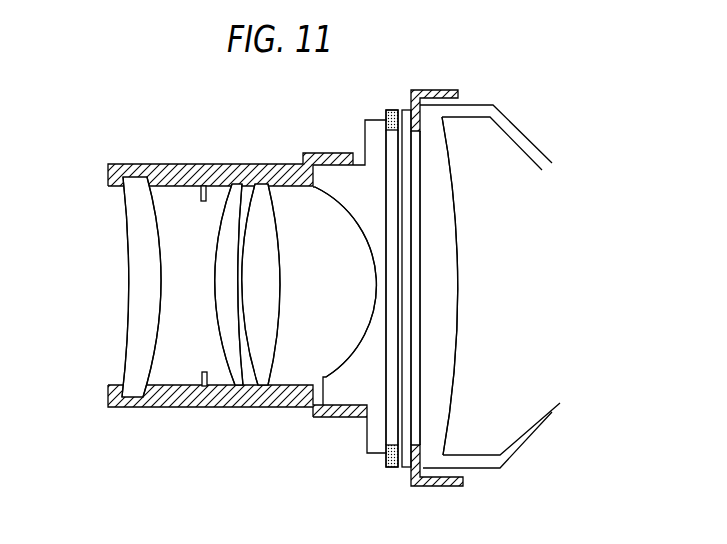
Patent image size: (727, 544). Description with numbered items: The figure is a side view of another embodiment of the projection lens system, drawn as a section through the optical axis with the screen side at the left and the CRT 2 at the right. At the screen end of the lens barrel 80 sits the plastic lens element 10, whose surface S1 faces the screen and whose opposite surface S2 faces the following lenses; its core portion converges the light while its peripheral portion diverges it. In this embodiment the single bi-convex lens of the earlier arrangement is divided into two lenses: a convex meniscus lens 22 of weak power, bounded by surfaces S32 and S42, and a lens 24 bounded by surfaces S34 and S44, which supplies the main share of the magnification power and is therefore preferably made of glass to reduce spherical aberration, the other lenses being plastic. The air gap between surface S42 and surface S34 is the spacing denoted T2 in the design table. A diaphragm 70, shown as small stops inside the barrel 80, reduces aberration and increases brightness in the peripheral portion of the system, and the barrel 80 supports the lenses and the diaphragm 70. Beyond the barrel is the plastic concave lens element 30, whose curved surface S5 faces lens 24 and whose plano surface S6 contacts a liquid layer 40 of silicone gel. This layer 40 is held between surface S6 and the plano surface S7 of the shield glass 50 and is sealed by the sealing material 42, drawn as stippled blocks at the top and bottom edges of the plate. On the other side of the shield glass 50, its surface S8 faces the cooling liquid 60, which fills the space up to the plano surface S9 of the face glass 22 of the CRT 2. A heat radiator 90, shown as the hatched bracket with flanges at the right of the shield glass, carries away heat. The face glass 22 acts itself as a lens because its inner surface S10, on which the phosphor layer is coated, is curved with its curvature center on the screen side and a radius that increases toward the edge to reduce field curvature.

The CRT 2 is at (538, 148).
The lens element 10 is at (133, 342).
The convex meniscus lens 22 is at (227, 343).
The lens 24 is at (273, 342).
The concave lens element 30 is at (350, 212).
The liquid layer 40 is at (397, 419).
The sealing material 42 is at (393, 468).
The shield glass 50 is at (409, 468).
The cooling liquid 60 is at (420, 342).
The diaphragm 70 is at (202, 193).
The lens barrel 80 is at (188, 403).
The heat radiator 90 is at (443, 486).
The surface S1 is at (124, 293).
The surface S2 is at (156, 291).
The surface S32 is at (215, 280).
The surface S34 is at (238, 275).
The surface S42 is at (242, 300).
The surface S44 is at (279, 274).
The surface S5 is at (375, 296).
The surface S6 is at (387, 335).
The surface S7 is at (390, 142).
The surface S8 is at (411, 143).
The surface S9 is at (420, 170).
The surface S10 is at (457, 255).